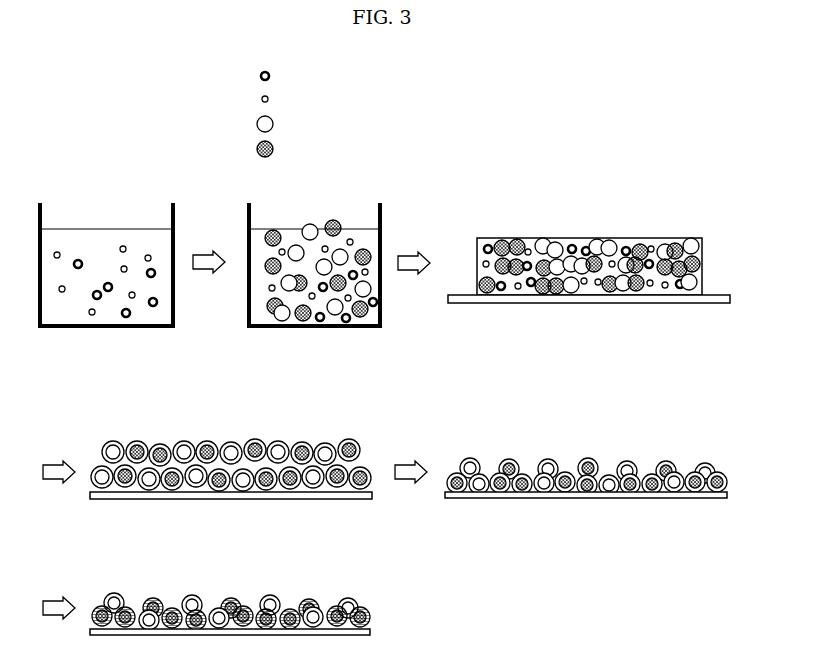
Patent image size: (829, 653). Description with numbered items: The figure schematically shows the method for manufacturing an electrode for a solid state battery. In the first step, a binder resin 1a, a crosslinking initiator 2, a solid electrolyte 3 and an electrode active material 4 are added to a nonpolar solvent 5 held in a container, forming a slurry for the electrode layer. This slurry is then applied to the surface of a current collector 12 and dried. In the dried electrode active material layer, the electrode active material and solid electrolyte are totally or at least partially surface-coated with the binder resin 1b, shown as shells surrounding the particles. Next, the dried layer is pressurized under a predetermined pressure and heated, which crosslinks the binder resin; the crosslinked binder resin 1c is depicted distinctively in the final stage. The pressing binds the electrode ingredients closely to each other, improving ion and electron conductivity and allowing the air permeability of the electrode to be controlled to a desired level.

The binder resin 1a is at (281, 76).
The crosslinking initiator 2 is at (276, 99).
The solid electrolyte 3 is at (274, 124).
The electrode active material 4 is at (274, 149).
The nonpolar solvent 5 is at (144, 318).
The current collector 12 is at (687, 305).
The binder resin 1b is at (210, 430).
The binder resin 1c is at (159, 586).